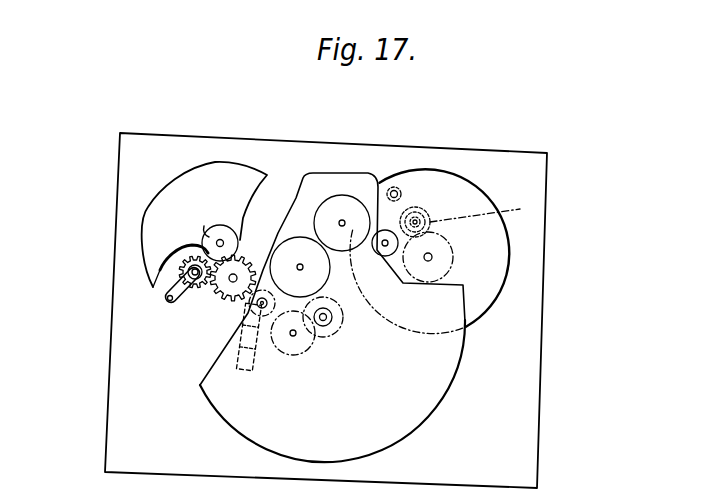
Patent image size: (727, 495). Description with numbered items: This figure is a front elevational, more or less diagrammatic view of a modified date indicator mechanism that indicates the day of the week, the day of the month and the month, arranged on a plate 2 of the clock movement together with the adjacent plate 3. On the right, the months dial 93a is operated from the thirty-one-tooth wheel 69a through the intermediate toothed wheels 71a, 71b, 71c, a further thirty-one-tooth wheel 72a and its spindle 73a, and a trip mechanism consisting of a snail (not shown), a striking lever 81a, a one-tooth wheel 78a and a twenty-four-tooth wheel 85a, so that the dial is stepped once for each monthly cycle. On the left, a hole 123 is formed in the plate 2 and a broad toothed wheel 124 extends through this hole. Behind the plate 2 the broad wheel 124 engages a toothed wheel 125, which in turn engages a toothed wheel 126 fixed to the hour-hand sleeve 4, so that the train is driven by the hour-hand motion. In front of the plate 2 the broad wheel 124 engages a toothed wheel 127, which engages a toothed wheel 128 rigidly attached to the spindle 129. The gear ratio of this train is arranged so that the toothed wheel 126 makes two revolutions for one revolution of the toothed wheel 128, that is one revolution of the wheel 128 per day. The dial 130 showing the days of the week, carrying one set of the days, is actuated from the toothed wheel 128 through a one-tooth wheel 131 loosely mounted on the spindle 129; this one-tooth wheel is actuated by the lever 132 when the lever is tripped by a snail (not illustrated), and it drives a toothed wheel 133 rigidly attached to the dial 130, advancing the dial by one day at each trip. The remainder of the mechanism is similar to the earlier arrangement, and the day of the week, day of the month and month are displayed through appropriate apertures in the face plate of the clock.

The plate 2 is at (527, 382).
The main plate 3 is at (332, 317).
The hour-hand sleeve 4 is at (332, 317).
The 31-tooth wheel 69a is at (338, 330).
The intermediate toothed wheel 71a is at (307, 237).
The intermediate toothed wheel 71b is at (350, 207).
The intermediate toothed wheel 71c is at (406, 282).
The 31-tooth wheel 72a is at (520, 209).
The spindle 73a is at (423, 217).
The one-tooth wheel 78a is at (418, 207).
The striking lever 81a is at (397, 186).
The 24-tooth wheel 85a is at (423, 271).
The months dial 93a is at (483, 240).
The hole 123 is at (247, 312).
The broad toothed wheel 124 is at (240, 305).
The toothed wheel 125 is at (292, 355).
The toothed wheel 126 is at (332, 332).
The toothed wheel 127 is at (265, 221).
The toothed wheel 128 is at (160, 269).
The spindle 129 is at (188, 248).
The dial 130 is at (153, 229).
The one-tooth wheel 131 is at (170, 305).
The lever 132 is at (163, 293).
The toothed wheel 133 is at (207, 226).